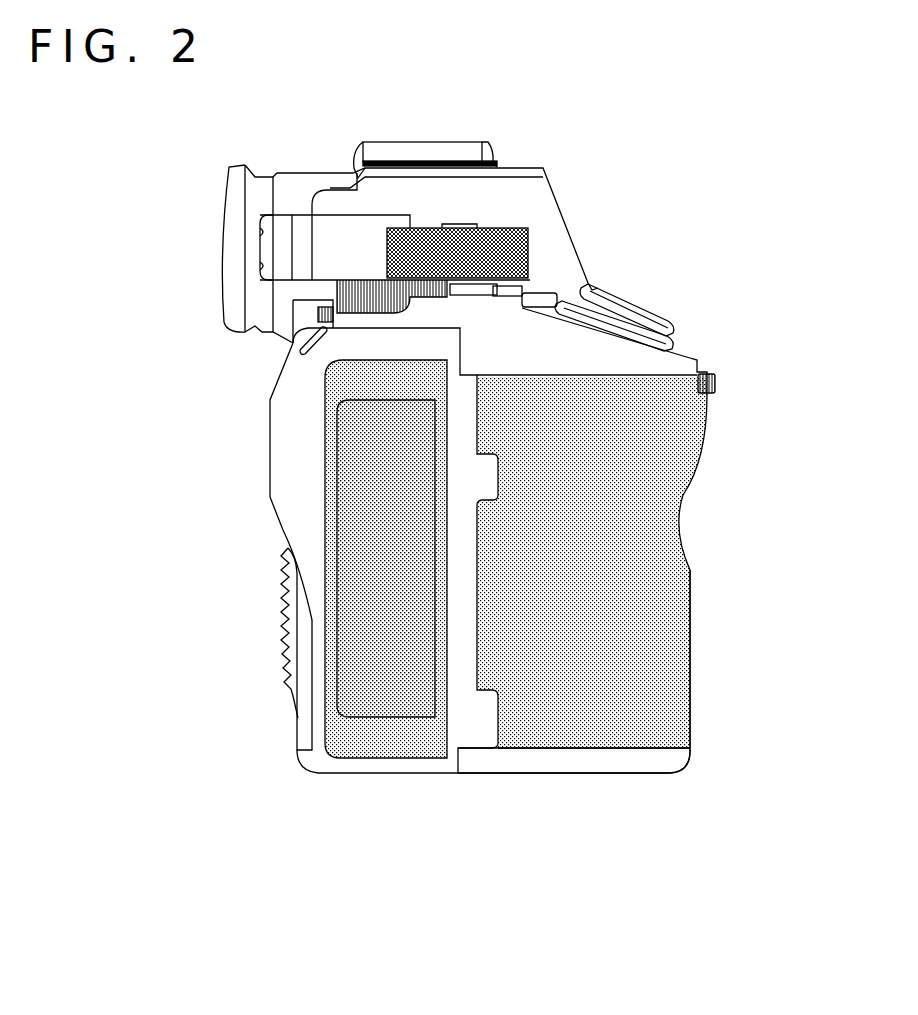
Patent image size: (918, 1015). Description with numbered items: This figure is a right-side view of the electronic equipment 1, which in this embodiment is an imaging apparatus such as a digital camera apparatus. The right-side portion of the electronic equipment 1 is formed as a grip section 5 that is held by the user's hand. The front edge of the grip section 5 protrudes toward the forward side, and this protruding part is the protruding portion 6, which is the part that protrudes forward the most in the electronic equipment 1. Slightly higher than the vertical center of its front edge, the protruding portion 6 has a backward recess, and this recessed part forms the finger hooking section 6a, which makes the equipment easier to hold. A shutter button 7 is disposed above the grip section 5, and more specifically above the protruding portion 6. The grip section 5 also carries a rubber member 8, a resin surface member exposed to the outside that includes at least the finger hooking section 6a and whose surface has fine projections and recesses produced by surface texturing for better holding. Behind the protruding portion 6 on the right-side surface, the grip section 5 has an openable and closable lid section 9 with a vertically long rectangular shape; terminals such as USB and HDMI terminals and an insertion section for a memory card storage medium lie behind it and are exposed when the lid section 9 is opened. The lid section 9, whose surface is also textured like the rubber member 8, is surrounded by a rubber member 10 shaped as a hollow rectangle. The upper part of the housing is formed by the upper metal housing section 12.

The electronic equipment 1 is at (752, 933).
The grip section 5 is at (707, 823).
The protruding portion 6 is at (707, 785).
The finger hooking section 6a is at (691, 494).
The shutter button 7 is at (620, 293).
The rubber member 8 is at (640, 602).
The lid section 9 is at (357, 707).
The rubber member 10 is at (335, 730).
The upper metal housing section 12 is at (537, 195).